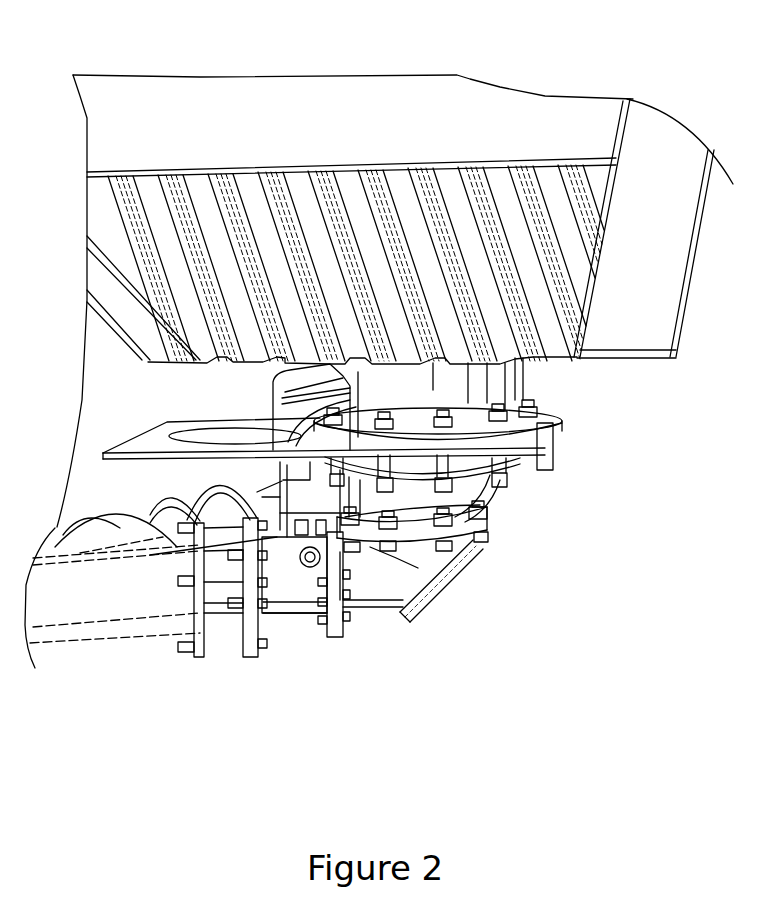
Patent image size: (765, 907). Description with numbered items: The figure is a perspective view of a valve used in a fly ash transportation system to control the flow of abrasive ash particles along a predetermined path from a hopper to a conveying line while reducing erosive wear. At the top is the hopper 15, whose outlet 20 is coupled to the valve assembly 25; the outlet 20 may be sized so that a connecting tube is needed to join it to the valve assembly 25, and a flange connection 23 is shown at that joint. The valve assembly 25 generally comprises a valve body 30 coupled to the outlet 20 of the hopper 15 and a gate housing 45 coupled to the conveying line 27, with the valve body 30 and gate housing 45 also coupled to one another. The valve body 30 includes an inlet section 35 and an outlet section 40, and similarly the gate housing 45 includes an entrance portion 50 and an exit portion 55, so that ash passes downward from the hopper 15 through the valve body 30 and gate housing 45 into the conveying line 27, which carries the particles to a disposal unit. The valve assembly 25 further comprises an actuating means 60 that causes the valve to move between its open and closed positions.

The hopper 15 is at (498, 180).
The outlet 20 is at (478, 380).
The flange connection 23 is at (457, 490).
The valve assembly 25 is at (430, 738).
The conveying line 27 is at (67, 525).
The valve body 30 is at (437, 700).
The inlet section 35 is at (420, 563).
The outlet section 40 is at (377, 550).
The gate housing 45 is at (337, 706).
The entrance portion 50 is at (315, 613).
The exit portion 55 is at (278, 613).
The actuating means 60 is at (307, 490).